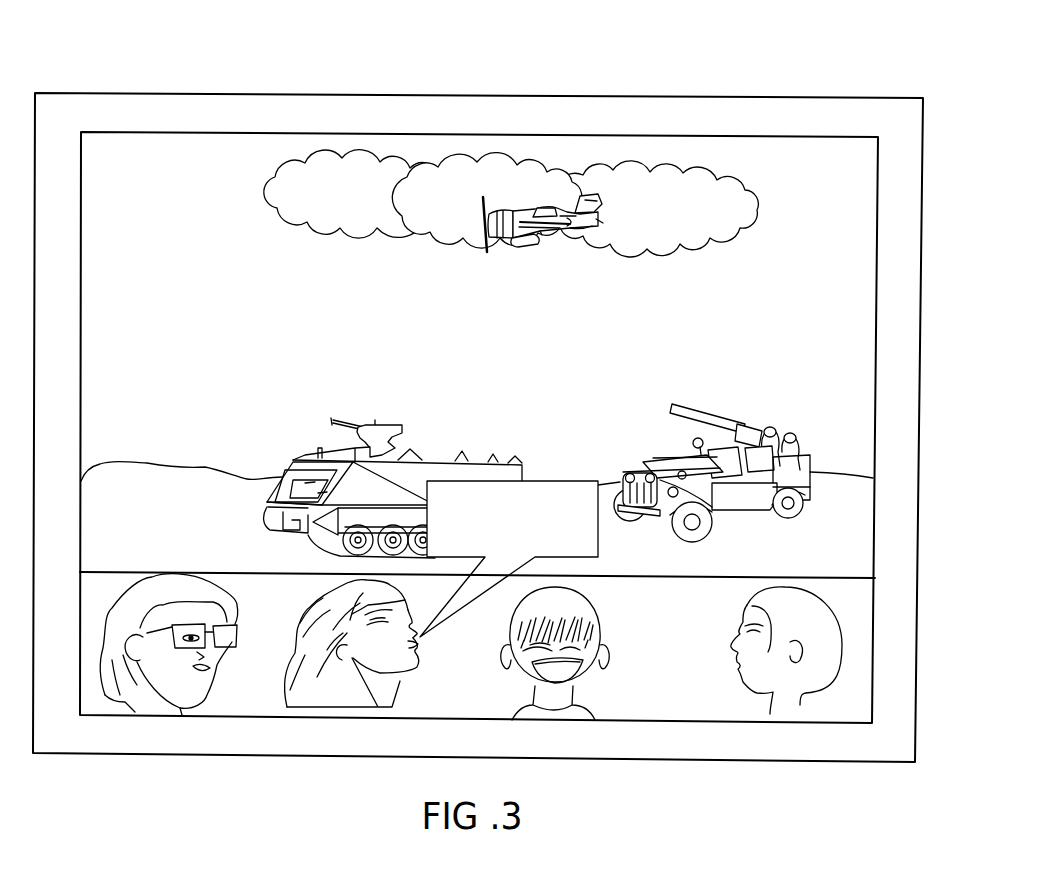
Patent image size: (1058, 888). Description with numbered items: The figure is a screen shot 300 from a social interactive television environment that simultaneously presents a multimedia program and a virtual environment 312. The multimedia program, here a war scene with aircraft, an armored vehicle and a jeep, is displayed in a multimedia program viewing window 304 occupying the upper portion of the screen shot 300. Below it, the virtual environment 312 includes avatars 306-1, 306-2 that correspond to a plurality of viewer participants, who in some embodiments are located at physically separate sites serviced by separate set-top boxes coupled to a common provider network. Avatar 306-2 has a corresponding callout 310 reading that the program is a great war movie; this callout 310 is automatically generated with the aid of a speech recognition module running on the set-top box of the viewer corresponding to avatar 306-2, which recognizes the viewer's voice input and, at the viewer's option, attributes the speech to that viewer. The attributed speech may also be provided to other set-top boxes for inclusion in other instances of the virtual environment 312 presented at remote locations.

The screen shot 300 is at (729, 66).
The multimedia program viewing window 304 is at (93, 310).
The avatar 306-1 is at (155, 700).
The avatar 306-2 is at (330, 700).
The callout 310 is at (563, 481).
The virtual environment 312 is at (90, 602).